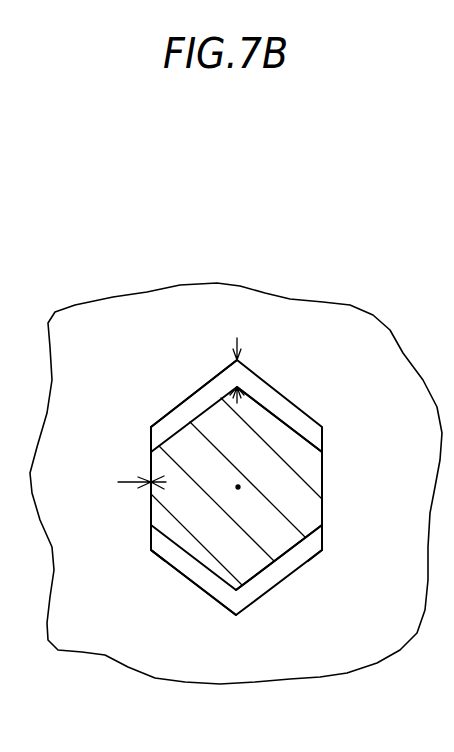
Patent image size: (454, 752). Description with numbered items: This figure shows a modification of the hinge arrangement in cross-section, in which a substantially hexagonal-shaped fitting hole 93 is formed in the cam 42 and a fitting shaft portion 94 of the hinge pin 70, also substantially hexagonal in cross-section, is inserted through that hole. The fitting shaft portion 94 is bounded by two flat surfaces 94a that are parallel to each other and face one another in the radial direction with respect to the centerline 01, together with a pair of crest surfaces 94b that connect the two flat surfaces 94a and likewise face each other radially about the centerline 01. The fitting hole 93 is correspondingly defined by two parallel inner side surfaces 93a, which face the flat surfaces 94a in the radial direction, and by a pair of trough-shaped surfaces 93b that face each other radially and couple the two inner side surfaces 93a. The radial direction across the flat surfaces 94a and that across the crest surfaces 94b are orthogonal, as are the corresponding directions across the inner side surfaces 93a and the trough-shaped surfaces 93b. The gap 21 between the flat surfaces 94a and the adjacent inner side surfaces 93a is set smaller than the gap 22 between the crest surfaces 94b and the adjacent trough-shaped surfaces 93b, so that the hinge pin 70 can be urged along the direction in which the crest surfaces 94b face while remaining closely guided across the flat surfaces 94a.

The cam 42 is at (120, 322).
The fitting hole 93 is at (322, 470).
The inner side surfaces 93a is at (156, 545).
The trough-shaped surfaces 93b is at (182, 404).
The fitting shaft portion 94 is at (268, 425).
The flat surfaces 94a is at (148, 507).
The crest surfaces 94b is at (259, 403).
The hinge pin 70 is at (373, 420).
The centerline 01 is at (240, 487).
The gap 21 is at (122, 480).
The gap 22 is at (237, 340).